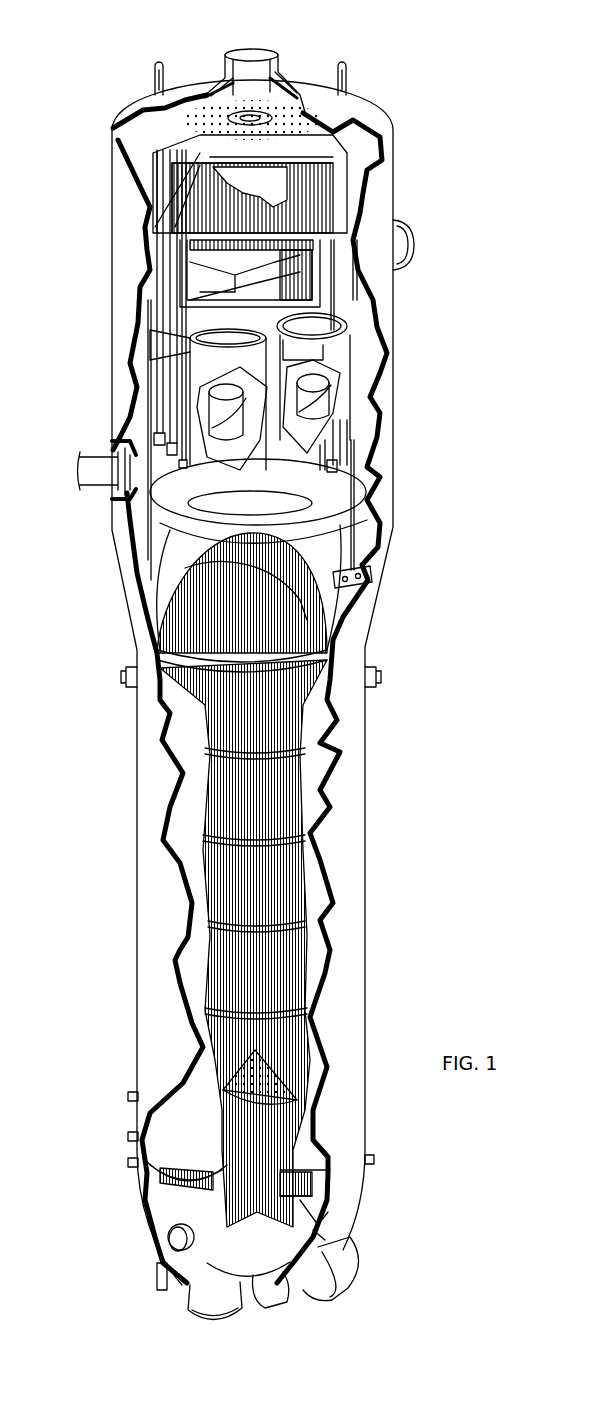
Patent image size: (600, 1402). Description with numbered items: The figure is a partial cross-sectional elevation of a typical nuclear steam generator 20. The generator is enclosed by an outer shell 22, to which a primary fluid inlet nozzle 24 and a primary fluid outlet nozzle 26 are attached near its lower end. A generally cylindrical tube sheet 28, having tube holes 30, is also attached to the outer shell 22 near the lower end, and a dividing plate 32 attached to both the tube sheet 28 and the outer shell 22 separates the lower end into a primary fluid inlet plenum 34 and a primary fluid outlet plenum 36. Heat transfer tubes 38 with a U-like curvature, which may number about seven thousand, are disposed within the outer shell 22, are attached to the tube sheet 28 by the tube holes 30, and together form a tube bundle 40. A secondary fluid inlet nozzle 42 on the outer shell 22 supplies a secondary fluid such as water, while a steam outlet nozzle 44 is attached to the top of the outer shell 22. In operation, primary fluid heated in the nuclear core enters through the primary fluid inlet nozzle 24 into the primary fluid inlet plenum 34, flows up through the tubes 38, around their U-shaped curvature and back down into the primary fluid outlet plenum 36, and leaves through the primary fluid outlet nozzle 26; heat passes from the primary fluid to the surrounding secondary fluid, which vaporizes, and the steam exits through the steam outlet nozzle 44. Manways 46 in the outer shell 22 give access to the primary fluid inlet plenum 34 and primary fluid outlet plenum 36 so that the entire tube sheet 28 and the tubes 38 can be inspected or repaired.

The nuclear steam generator 20 is at (412, 494).
The outer shell 22 is at (123, 268).
The primary fluid inlet nozzle 24 is at (343, 1293).
The primary fluid outlet nozzle 26 is at (208, 1303).
The tube sheet 28 is at (170, 1193).
The tube holes 30 is at (277, 1195).
The dividing plate 32 is at (253, 1260).
The primary fluid inlet plenum 34 is at (310, 1228).
The primary fluid outlet plenum 36 is at (164, 1230).
The tubes 38 is at (381, 857).
The tube bundle 40 is at (275, 783).
The secondary fluid inlet nozzle 42 is at (93, 489).
The steam outlet nozzle 44 is at (280, 83).
The manways 46 is at (160, 1257).